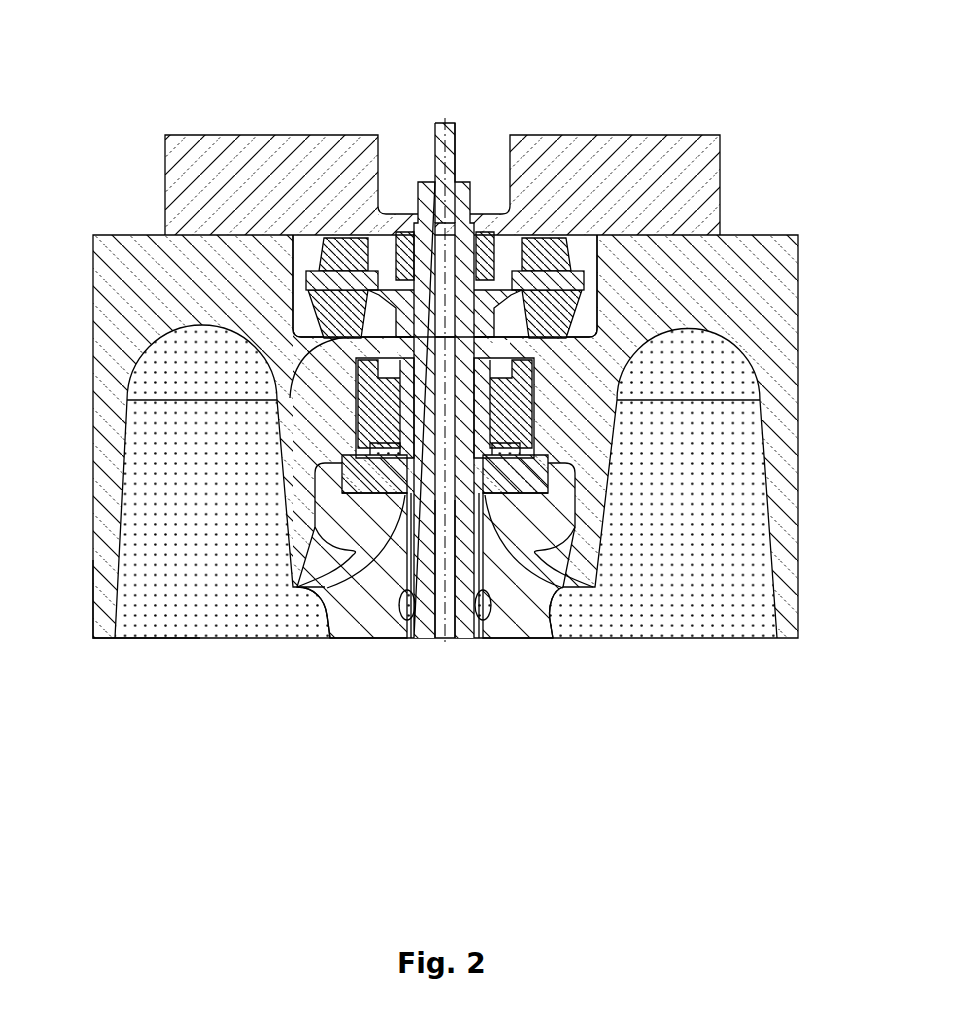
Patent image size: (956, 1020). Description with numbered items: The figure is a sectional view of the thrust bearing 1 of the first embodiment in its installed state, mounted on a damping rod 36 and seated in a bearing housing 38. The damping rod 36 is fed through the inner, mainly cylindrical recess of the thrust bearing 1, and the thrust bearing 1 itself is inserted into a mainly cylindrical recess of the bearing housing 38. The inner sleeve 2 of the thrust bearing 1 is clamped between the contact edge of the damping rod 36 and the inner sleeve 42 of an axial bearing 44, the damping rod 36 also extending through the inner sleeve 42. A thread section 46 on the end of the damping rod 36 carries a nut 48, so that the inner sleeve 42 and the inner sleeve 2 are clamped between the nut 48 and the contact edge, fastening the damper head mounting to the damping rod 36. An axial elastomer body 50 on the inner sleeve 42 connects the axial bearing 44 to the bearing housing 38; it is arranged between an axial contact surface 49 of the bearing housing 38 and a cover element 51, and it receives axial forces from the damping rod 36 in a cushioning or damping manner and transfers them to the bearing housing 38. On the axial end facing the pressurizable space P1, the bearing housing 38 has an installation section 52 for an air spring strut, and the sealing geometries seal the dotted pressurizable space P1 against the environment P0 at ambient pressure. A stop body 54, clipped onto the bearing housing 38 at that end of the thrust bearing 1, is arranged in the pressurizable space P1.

The bearing housing 38 is at (705, 300).
The installation section 52 is at (100, 605).
The cover element 51 is at (300, 165).
The axial elastomer body 50 is at (327, 290).
The axial bearing 44 is at (560, 233).
The inner sleeve of the axial bearing 42 is at (603, 282).
The nut 48 is at (483, 232).
The thread section 46 is at (418, 227).
The damping rod 36 is at (468, 635).
The axial contact surface 49 is at (318, 365).
The environment P0 is at (343, 320).
The pressurizable space P1 is at (228, 567).
The thrust bearing 1 is at (545, 417).
The inner sleeve 2 is at (522, 447).
The stop body 54 is at (530, 625).